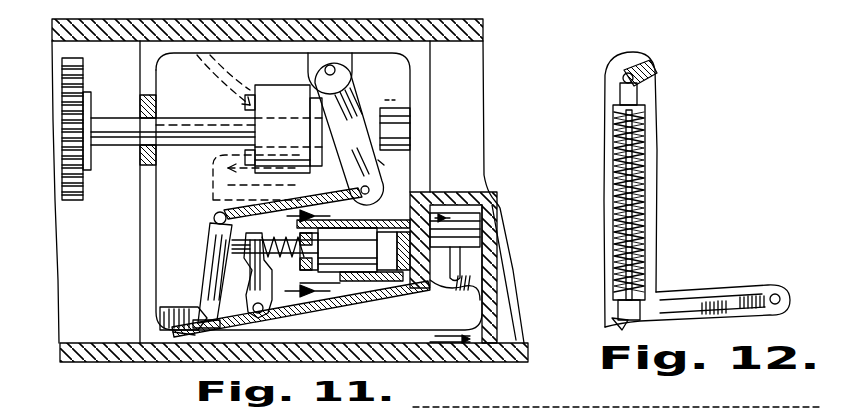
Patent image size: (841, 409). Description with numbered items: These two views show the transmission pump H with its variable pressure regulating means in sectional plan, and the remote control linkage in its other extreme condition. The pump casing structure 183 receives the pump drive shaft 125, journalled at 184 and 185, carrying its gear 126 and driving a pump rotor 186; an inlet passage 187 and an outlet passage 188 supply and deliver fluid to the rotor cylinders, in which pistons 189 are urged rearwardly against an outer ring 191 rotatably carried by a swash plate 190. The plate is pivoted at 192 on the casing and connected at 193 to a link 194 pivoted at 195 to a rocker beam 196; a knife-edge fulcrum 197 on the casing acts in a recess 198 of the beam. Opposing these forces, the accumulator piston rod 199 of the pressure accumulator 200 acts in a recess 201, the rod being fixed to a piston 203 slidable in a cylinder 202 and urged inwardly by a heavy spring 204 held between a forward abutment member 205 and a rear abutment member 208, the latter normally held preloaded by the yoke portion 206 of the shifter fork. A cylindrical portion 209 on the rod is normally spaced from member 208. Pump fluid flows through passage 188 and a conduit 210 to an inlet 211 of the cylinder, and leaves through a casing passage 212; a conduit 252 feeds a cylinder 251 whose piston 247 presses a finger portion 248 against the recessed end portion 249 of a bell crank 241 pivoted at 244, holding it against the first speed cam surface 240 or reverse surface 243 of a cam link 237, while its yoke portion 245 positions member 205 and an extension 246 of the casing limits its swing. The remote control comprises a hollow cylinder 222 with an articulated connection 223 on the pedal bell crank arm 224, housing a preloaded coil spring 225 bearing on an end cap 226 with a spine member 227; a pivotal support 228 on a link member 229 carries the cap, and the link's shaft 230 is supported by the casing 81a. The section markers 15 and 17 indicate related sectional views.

In FIG. 11, the casing 81a is at (100, 38).
In FIG. 11, the pump H is at (432, 78).
In FIG. 11, the journal 184 is at (140, 108).
In FIG. 11, the gear 126 is at (75, 200).
In FIG. 11, the pump drive shaft 125 is at (128, 150).
In FIG. 11, the pump rotor 186 is at (290, 75).
In FIG. 11, the outlet passage 188 is at (282, 146).
In FIG. 11, the inlet passage 187 is at (258, 88).
In FIG. 11, the swash plate 190 is at (362, 85).
In FIG. 11, the pivotal support 192 is at (330, 65).
In FIG. 11, the pistons 189 is at (360, 190).
In FIG. 11, the journal 185 is at (410, 105).
In FIG. 11, the outer ring 191 is at (397, 162).
In FIG. 11, the casing structure 183 is at (428, 160).
In FIG. 11, the pivotal connection 193 is at (400, 182).
In FIG. 11, the conduit 210 is at (212, 188).
In FIG. 11, the heavy spring 204 is at (264, 180).
In FIG. 11, the link 194 is at (293, 198).
In FIG. 11, the pivot 195 is at (214, 220).
In FIG. 11, the recess 198 is at (220, 330).
In FIG. 11, the yoke portion 245 is at (212, 236).
In FIG. 11, the recess 201 is at (230, 262).
In FIG. 11, the rocker beam 196 is at (208, 279).
In FIG. 11, the forward abutment member 205 is at (250, 292).
In FIG. 11, the pivotal support 244 is at (170, 318).
In FIG. 11, the knife-edge fulcrum 197 is at (195, 327).
In FIG. 11, the accumulator piston rod 199 is at (266, 330).
In FIG. 11, the yoke portion 206 is at (353, 250).
In FIG. 11, the cylindrical portion 209 is at (400, 225).
In FIG. 11, the pressure accumulator 200 is at (365, 282).
In FIG. 11, the section line 15 is at (324, 254).
In FIG. 11, the section line 17 is at (504, 296).
In FIG. 11, the cylinder 202 is at (478, 212).
In FIG. 11, the conduit 252 is at (485, 190).
In FIG. 11, the cylinder 251 is at (480, 225).
In FIG. 11, the inlet 211 is at (462, 250).
In FIG. 11, the casing passage 212 is at (445, 300).
In FIG. 11, the piston 247 is at (470, 262).
In FIG. 11, the finger portion 248 is at (490, 282).
In FIG. 11, the recessed end portion 249 is at (495, 305).
In FIG. 11, the first speed cam surface 240 is at (490, 322).
In FIG. 11, the reverse speed cam surface 243 is at (495, 338).
In FIG. 11, the piston 203 is at (372, 310).
In FIG. 11, the rear abutment member 208 is at (340, 310).
In FIG. 11, the bell crank 241 is at (350, 330).
In FIG. 11, the extension 246 is at (430, 342).
In FIG. 11, the cam link 237 is at (435, 362).
In FIG. 12, the hollow cylinder 222 is at (646, 142).
In FIG. 12, the articulated connection 223 is at (622, 80).
In FIG. 12, the bell crank arm 224 is at (656, 68).
In FIG. 12, the preloaded coil spring 225 is at (646, 262).
In FIG. 12, the spine member 227 is at (618, 248).
In FIG. 12, the link member 229 is at (690, 292).
In FIG. 12, the shaft 230 is at (781, 291).
In FIG. 12, the end cap 226 is at (612, 318).
In FIG. 12, the pivotal support 228 is at (622, 330).